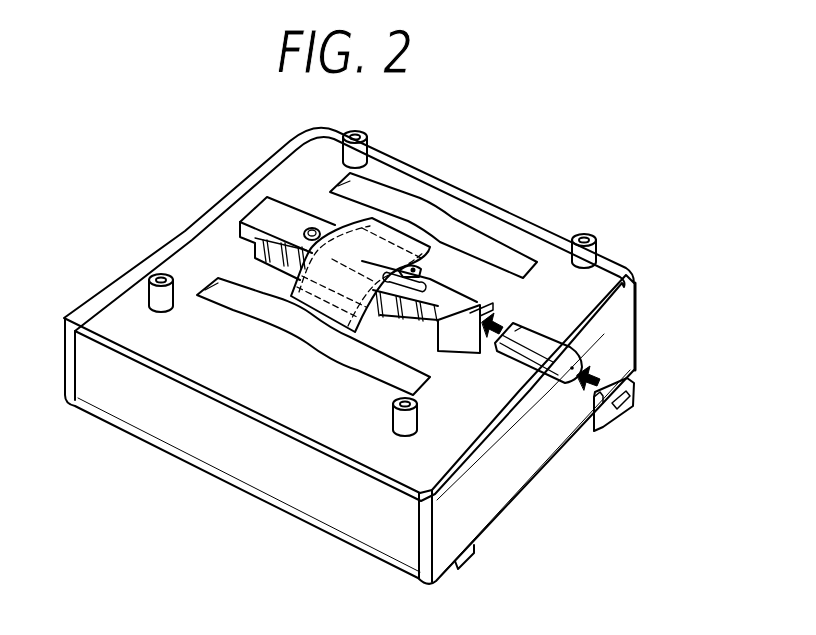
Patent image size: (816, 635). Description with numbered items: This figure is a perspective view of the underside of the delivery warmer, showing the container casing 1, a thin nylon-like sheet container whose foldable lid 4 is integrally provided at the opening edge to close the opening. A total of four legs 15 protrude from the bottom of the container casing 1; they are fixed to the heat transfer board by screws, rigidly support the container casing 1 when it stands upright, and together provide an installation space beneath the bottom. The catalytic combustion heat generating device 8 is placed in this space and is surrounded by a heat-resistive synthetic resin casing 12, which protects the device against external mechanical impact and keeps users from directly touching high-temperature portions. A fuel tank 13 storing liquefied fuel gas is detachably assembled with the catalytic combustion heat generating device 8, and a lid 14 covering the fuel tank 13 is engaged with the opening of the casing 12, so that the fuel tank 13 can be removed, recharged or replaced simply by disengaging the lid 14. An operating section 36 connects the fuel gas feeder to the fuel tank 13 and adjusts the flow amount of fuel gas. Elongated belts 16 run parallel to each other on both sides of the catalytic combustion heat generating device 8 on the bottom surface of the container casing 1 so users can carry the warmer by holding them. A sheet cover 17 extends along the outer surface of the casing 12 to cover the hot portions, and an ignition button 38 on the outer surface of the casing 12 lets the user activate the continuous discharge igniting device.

The container casing 1 is at (531, 448).
The lid 4 is at (458, 567).
The catalytic combustion heat generating device 8 is at (267, 203).
The synthetic resin casing 12 is at (488, 315).
The fuel tank 13 is at (561, 349).
The lid 14 is at (630, 400).
The legs 15 is at (598, 241).
The elongated belts 16 is at (378, 193).
The sheet cover 17 is at (370, 250).
The operating section 36 is at (419, 267).
The ignition button 38 is at (309, 227).